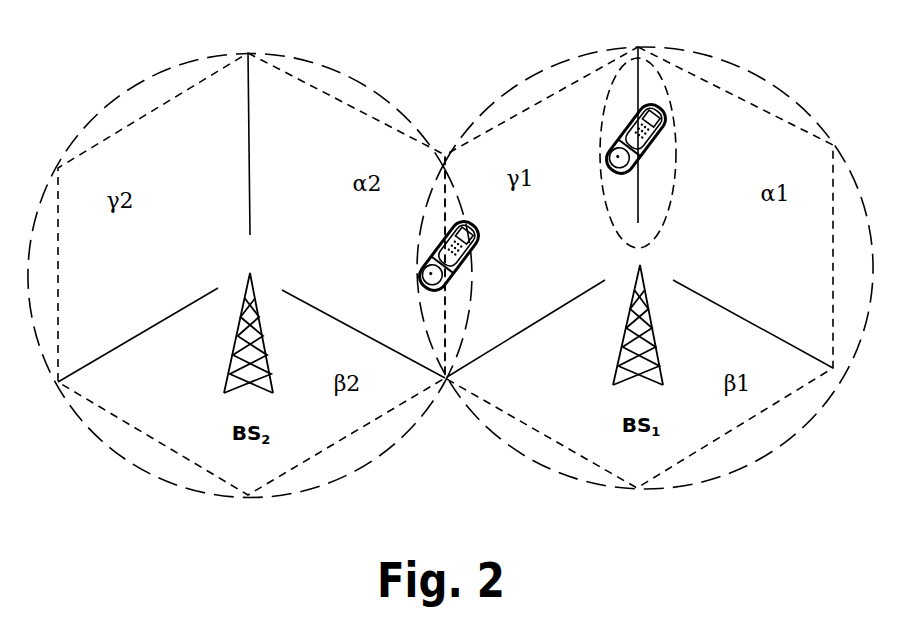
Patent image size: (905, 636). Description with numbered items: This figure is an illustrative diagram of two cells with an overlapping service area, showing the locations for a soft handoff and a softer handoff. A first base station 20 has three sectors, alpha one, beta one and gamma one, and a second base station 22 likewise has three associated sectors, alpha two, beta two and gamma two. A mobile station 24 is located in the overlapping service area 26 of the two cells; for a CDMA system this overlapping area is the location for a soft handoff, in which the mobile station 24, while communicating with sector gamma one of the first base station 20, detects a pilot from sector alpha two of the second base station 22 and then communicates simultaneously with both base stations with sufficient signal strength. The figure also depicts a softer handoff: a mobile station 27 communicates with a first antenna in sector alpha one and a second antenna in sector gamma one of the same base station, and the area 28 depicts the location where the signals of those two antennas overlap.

The first base station 20 is at (644, 281).
The second base station 22 is at (255, 287).
The mobile station 24 is at (477, 258).
The overlapping service area 26 is at (420, 318).
The mobile station 27 is at (667, 118).
The area 28 is at (620, 225).